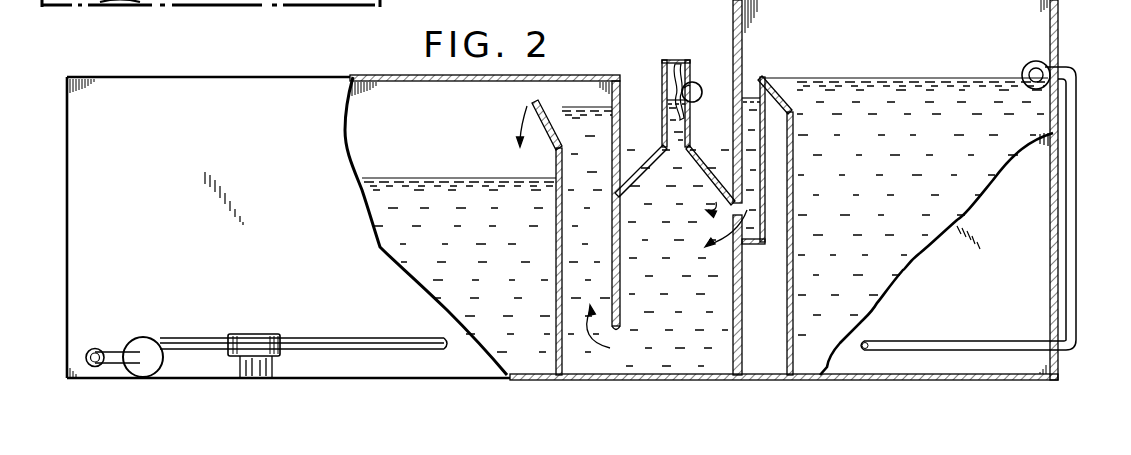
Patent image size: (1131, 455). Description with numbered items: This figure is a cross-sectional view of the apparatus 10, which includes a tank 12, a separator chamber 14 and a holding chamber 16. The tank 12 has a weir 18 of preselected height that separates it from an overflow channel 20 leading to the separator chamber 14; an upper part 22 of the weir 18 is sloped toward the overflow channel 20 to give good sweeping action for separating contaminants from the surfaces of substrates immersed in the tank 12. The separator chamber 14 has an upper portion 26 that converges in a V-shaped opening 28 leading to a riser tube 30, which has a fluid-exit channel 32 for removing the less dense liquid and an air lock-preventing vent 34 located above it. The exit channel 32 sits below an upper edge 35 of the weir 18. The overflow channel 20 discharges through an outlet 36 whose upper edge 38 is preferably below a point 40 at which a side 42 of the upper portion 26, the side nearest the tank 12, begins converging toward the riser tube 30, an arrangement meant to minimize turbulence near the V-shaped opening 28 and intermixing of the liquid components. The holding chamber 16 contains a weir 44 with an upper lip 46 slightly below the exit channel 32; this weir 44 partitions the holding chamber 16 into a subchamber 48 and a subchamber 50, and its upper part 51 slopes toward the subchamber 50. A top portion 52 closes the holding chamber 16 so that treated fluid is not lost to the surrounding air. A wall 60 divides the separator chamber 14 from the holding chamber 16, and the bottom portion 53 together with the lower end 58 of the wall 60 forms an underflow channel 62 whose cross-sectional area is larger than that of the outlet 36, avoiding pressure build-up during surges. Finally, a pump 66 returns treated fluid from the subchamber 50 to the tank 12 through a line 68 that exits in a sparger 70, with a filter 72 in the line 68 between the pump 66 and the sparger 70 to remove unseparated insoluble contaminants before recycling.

The apparatus 10 is at (599, 64).
The tank 12 is at (1010, 34).
The separator chamber 14 is at (642, 78).
The holding chamber 16 is at (229, 95).
The weir 18 is at (796, 158).
The overflow channel 20 is at (748, 99).
The upper part of weir 22 is at (784, 90).
The upper portion 26 is at (641, 176).
The V-shaped opening 28 is at (687, 172).
The riser tube 30 is at (665, 73).
The exit channel 32 is at (699, 83).
The air lock-preventing vent 34 is at (676, 58).
The upper edge of weir 35 is at (770, 78).
The outlet 36 is at (733, 232).
The upper edge of outlet 38 is at (734, 212).
The point 40 is at (730, 203).
The side 42 is at (704, 163).
The weir 44 is at (555, 250).
The upper lip 46 is at (532, 100).
The subchamber 48 is at (598, 266).
The subchamber 50 is at (446, 266).
The upper part of weir 51 is at (548, 113).
The top portion 52 is at (385, 76).
The bottom portion 53 is at (662, 378).
The lower end of wall 58 is at (622, 334).
The wall 60 is at (612, 192).
The underflow channel 62 is at (610, 352).
The pump 66 is at (143, 345).
The line 68 is at (360, 338).
The sparger 70 is at (1048, 62).
The filter 72 is at (252, 338).